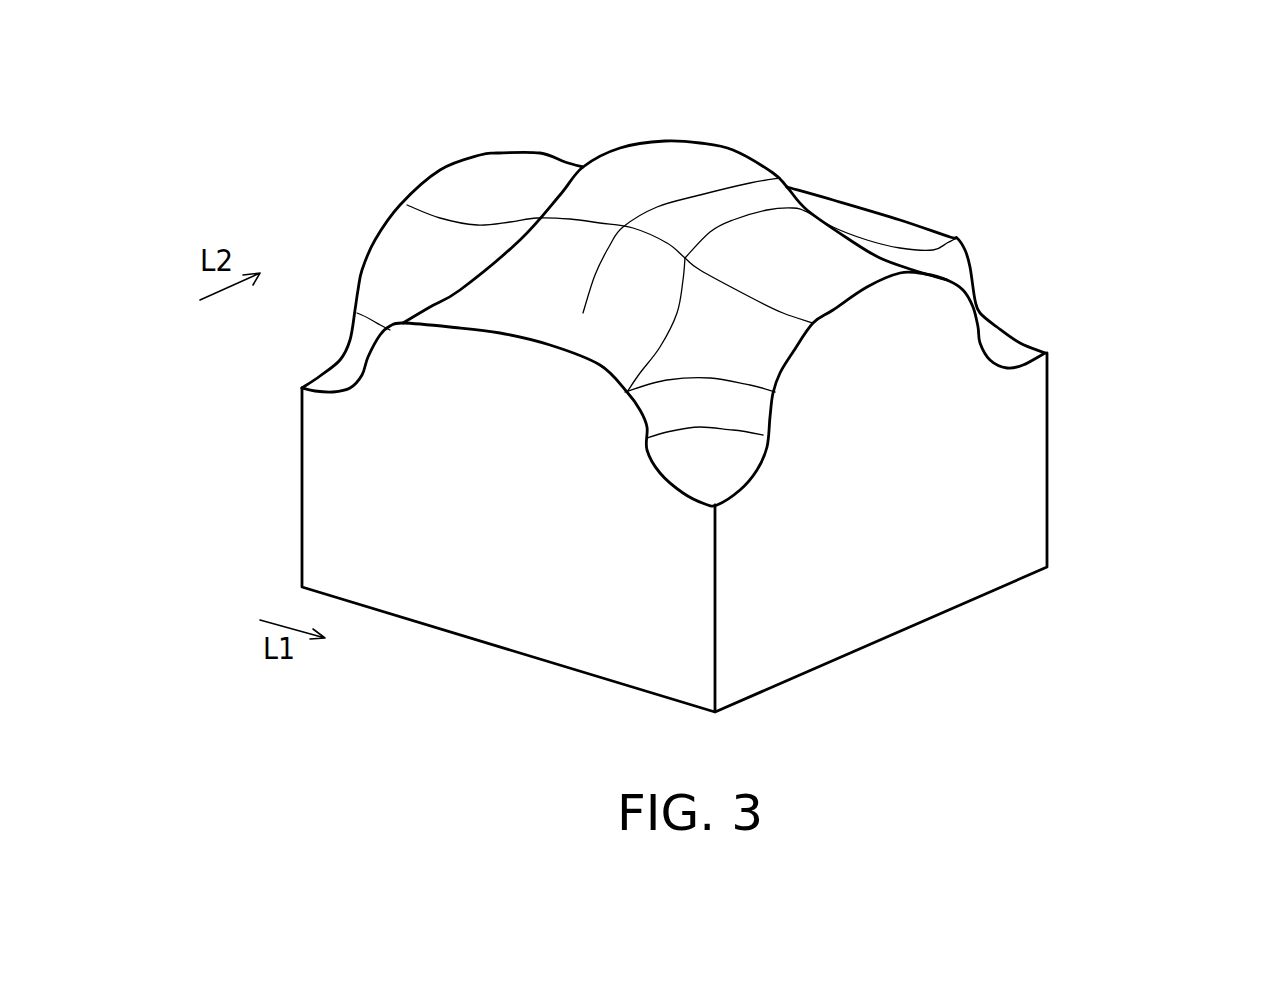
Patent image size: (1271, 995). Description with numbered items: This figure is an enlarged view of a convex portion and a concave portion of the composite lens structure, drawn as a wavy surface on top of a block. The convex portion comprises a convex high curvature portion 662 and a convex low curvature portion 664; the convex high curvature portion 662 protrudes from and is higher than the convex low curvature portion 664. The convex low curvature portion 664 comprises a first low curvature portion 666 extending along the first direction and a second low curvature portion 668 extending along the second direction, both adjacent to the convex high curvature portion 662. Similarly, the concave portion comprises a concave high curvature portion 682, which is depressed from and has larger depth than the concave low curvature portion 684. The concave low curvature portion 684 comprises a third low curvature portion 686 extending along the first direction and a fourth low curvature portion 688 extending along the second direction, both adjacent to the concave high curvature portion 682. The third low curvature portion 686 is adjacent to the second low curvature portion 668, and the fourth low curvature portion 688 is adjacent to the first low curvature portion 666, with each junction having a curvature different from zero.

The convex high curvature portion 662 is at (677, 167).
The convex low curvature portion 664 is at (953, 112).
The first low curvature portion 666 is at (813, 267).
The second low curvature portion 668 is at (780, 177).
The concave high curvature portion 682 is at (717, 487).
The concave low curvature portion 684 is at (1192, 380).
The third low curvature portion 686 is at (653, 373).
The fourth low curvature portion 688 is at (770, 350).